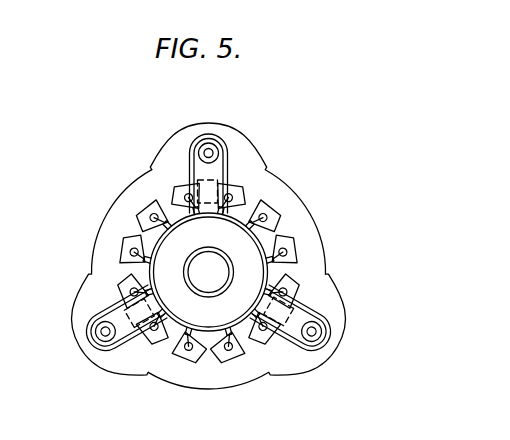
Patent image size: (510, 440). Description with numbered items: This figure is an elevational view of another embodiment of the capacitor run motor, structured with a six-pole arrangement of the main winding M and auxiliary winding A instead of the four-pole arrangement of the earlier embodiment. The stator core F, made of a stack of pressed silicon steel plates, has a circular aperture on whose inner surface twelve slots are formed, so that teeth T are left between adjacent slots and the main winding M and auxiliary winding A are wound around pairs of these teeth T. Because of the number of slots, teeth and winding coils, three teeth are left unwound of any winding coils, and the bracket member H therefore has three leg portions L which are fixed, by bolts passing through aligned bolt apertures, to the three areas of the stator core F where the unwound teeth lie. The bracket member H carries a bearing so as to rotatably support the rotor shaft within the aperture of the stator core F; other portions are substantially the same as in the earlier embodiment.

The stator core F is at (329, 255).
The bracket member H is at (196, 310).
The main winding M is at (241, 211).
The auxiliary winding A is at (273, 219).
The leg portion L is at (190, 165).
The tooth T is at (218, 180).